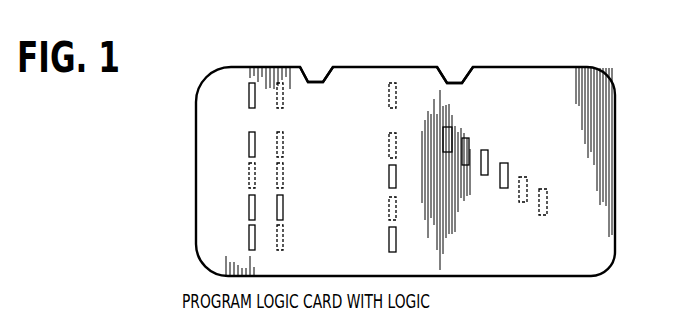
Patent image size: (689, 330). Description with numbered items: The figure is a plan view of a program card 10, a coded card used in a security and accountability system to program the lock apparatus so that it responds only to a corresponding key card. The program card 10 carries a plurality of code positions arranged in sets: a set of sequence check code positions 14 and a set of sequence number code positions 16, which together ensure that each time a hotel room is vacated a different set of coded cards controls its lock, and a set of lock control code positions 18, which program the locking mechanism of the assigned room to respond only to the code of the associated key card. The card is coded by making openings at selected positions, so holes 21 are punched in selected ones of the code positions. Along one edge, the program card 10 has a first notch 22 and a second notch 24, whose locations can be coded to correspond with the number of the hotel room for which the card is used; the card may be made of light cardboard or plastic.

The program card 10 is at (602, 147).
The sequence check code positions 14 is at (395, 81).
The sequence number code positions 16 is at (495, 155).
The lock control code positions 18 is at (266, 87).
The holes 21 is at (251, 95).
The first notch 22 is at (460, 83).
The second notch 24 is at (323, 82).